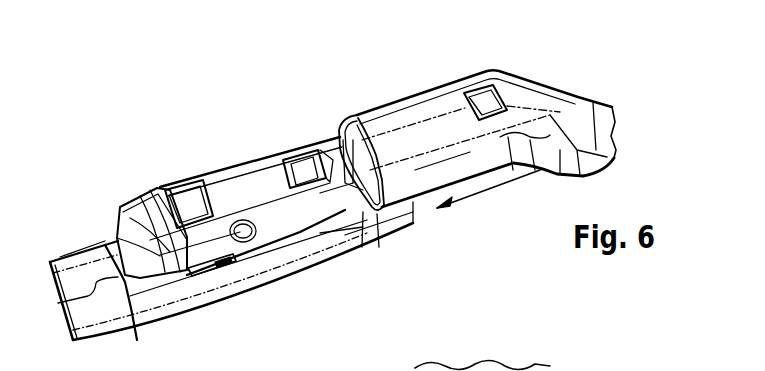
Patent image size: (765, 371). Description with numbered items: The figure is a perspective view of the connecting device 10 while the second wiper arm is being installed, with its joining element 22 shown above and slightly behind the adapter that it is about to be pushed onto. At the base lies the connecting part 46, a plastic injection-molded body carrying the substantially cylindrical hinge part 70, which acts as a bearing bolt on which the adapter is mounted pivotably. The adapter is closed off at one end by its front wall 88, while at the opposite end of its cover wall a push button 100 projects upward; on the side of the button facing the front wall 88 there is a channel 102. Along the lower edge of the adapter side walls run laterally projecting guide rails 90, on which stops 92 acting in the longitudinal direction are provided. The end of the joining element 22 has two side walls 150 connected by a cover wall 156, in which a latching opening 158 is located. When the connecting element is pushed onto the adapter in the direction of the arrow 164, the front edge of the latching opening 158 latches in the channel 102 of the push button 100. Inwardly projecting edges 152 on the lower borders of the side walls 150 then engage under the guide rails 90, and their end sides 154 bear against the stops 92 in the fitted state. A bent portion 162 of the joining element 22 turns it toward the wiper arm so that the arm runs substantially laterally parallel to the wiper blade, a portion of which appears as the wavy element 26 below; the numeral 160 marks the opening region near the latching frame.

The connecting device 10 is at (225, 242).
The joining element 22 is at (506, 155).
The wiper blade 26 is at (338, 370).
The connecting part 46 is at (141, 307).
The hinge part 70 is at (243, 234).
The front wall 88 is at (118, 224).
The guide rails 90 is at (203, 269).
The stops 92 is at (227, 266).
The push button 100 is at (303, 162).
The channel 102 is at (283, 160).
The side walls 150 is at (475, 172).
The edges 152 is at (427, 198).
The end sides 154 is at (367, 220).
The cover wall 156 is at (390, 117).
The latching opening 158 is at (503, 97).
The opening 160 is at (472, 92).
The bent portion 162 is at (600, 130).
The arrow 164 is at (470, 170).